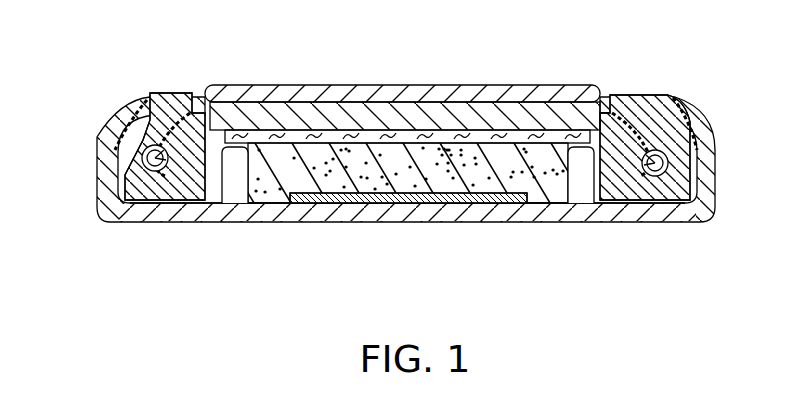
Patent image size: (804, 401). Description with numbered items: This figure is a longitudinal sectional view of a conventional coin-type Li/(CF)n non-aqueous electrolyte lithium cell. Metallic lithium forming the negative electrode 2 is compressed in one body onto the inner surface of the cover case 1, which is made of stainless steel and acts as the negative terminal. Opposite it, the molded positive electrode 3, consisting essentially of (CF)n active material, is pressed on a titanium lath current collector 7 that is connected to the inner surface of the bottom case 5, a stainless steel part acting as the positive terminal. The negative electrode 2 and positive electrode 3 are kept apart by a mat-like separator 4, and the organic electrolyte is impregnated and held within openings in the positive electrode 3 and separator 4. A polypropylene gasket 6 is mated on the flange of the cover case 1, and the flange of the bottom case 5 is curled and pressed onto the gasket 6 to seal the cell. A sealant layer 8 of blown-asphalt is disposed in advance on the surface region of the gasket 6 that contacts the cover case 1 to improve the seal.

The cover case 1 is at (282, 86).
The negative electrode 2 is at (346, 88).
The positive electrode 3 is at (473, 150).
The separator 4 is at (413, 128).
The bottom case 5 is at (225, 212).
The gasket 6 is at (643, 100).
The current collector 7 is at (418, 203).
The sealant layer 8 is at (698, 175).